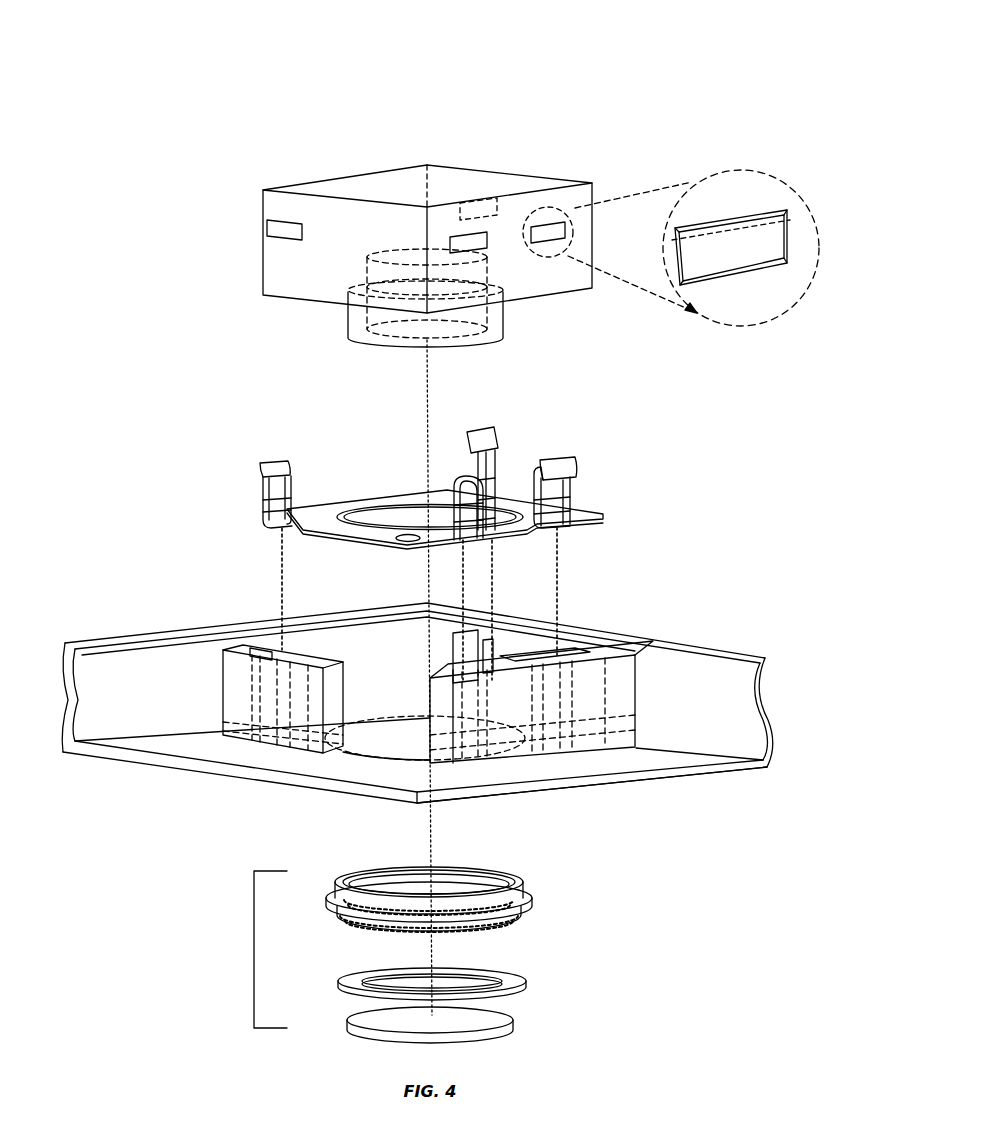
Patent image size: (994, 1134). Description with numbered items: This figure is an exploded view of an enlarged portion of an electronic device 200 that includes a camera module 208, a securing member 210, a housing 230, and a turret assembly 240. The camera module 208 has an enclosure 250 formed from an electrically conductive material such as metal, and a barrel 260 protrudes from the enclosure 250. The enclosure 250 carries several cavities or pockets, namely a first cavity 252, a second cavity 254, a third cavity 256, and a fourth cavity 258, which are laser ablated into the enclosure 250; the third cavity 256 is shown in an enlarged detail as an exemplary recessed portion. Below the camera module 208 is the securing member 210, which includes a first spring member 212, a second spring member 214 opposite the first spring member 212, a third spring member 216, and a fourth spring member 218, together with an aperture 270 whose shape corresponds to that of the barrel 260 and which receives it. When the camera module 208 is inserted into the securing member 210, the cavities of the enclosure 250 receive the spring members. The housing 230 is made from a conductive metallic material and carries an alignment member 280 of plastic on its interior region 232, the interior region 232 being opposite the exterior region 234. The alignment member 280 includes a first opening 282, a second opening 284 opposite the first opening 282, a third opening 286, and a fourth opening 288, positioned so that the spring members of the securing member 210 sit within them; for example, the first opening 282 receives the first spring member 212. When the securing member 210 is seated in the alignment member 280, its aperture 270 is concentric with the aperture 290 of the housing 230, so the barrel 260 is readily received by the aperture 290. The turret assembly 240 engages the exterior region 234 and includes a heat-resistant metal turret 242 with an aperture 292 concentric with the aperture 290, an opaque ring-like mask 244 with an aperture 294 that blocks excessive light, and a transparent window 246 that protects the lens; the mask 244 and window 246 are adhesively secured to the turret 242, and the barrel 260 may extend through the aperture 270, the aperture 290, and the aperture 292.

The electronic device 200 is at (123, 82).
The camera module 208 is at (295, 142).
The securing member 210 is at (237, 415).
The first spring member 212 is at (498, 435).
The second spring member 214 is at (258, 468).
The third spring member 216 is at (573, 468).
The fourth spring member 218 is at (450, 490).
The housing 230 is at (172, 600).
The interior region 232 is at (158, 707).
The exterior region 234 is at (672, 792).
The turret assembly 240 is at (254, 949).
The turret 242 is at (535, 900).
The mask 244 is at (528, 982).
The window 246 is at (513, 1021).
The enclosure 250 is at (518, 162).
The first cavity 252 is at (462, 198).
The second cavity 254 is at (262, 228).
The third cavity 256 is at (768, 215).
The fourth cavity 258 is at (487, 245).
The barrel 260 is at (347, 318).
The aperture 270 is at (362, 492).
The alignment member 280 is at (620, 638).
The first opening 282 is at (445, 640).
The second opening 284 is at (297, 652).
The third opening 286 is at (552, 662).
The fourth opening 288 is at (472, 668).
The aperture 290 is at (388, 720).
The aperture 292 is at (467, 870).
The aperture 294 is at (478, 962).